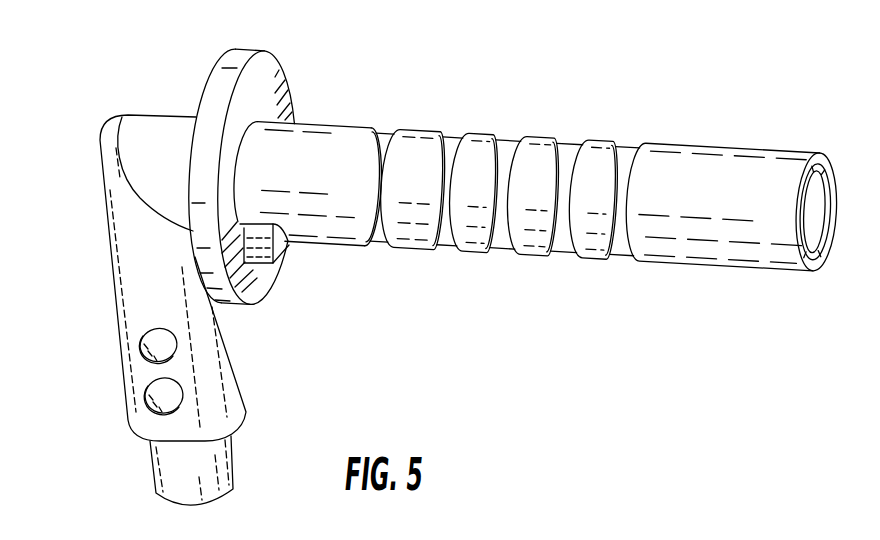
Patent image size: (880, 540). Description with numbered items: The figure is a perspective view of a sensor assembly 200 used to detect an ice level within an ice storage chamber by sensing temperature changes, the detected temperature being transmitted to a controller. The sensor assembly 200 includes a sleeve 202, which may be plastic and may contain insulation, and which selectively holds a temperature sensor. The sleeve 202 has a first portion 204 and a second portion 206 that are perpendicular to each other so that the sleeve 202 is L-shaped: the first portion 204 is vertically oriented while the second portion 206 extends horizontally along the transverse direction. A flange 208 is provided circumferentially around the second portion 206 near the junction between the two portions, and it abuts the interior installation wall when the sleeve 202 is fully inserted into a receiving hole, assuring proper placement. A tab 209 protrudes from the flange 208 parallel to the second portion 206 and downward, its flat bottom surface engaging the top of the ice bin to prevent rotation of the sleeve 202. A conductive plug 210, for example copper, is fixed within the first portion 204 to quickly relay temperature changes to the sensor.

The sensor assembly 200 is at (671, 72).
The sleeve 202 is at (148, 23).
The first portion 204 is at (121, 278).
The second portion 206 is at (343, 128).
The flange 208 is at (261, 297).
The tab 209 is at (288, 244).
The conductive plug 210 is at (174, 460).